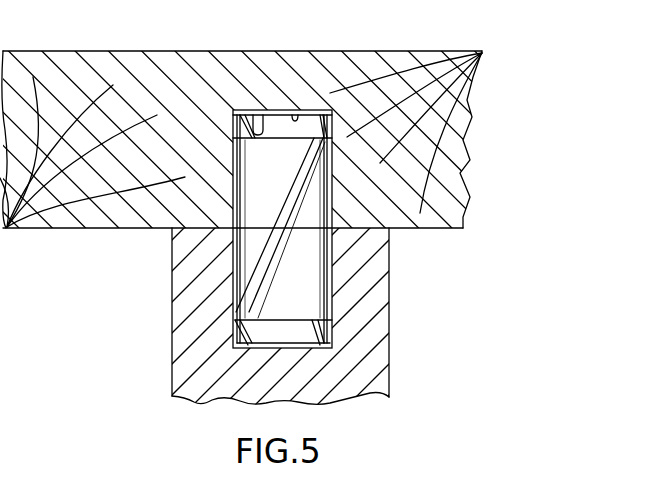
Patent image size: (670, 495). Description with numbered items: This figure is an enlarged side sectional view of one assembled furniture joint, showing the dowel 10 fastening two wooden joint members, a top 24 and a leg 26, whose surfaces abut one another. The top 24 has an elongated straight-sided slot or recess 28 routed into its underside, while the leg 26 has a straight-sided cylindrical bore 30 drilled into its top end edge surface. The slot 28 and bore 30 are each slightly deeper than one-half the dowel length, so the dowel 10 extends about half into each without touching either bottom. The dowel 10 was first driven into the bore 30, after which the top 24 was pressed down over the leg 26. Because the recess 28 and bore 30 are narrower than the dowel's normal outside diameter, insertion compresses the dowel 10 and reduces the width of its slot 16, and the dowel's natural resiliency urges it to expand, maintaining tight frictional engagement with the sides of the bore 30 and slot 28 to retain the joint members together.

The dowel 10 is at (340, 203).
The slot 16 is at (264, 258).
The top 24 is at (143, 60).
The leg 26 is at (181, 323).
The slot or recess 28 is at (296, 116).
The cylindrical bore 30 is at (331, 348).